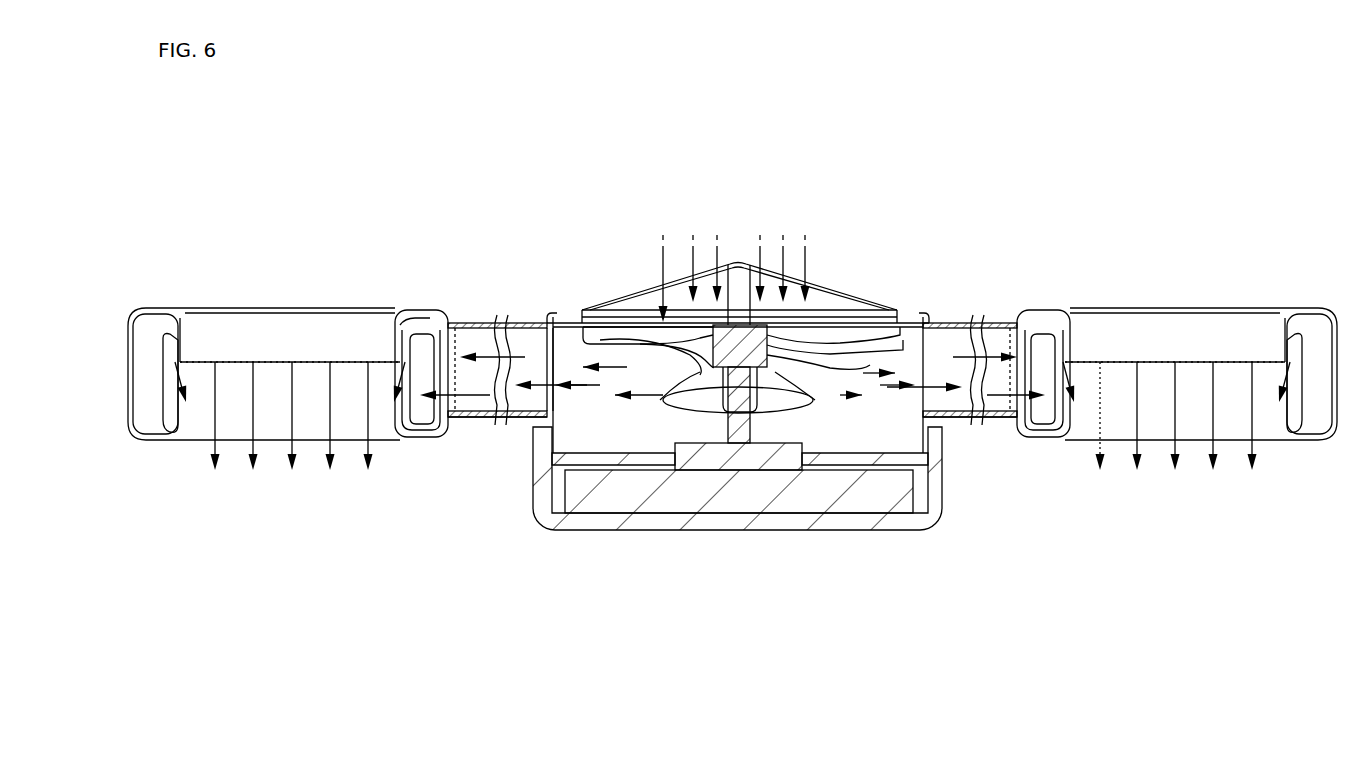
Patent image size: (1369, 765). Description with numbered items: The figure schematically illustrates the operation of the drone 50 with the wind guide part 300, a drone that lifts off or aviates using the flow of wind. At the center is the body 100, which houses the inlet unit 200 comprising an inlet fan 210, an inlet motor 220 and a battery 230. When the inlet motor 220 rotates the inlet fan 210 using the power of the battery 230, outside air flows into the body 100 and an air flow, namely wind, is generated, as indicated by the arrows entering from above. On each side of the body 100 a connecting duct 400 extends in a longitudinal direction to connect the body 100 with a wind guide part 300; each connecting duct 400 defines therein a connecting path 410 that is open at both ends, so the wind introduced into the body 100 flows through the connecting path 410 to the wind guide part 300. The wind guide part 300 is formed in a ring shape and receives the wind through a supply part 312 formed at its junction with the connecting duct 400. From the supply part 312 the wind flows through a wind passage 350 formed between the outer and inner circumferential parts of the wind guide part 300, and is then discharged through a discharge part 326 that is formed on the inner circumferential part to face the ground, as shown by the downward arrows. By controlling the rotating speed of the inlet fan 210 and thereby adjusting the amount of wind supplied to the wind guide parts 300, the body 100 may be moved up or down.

The drone 50 is at (440, 129).
The body 100 is at (597, 540).
The inlet unit 200 is at (772, 333).
The inlet fan 210 is at (603, 335).
The inlet motor 220 is at (707, 458).
The battery 230 is at (806, 498).
The wind guide part 300 is at (240, 290).
The supply part 312 is at (466, 420).
The discharge part 326 is at (268, 362).
The wind passage 350 is at (430, 340).
The connecting duct 400 is at (488, 300).
The connecting path 410 is at (448, 345).